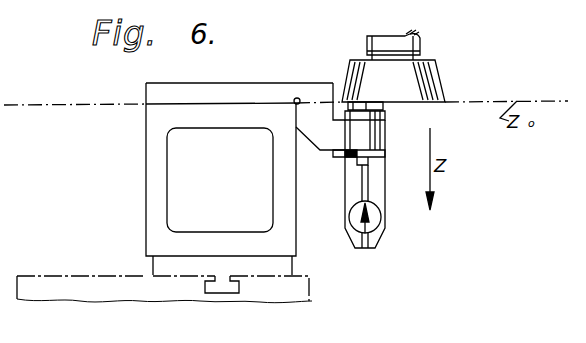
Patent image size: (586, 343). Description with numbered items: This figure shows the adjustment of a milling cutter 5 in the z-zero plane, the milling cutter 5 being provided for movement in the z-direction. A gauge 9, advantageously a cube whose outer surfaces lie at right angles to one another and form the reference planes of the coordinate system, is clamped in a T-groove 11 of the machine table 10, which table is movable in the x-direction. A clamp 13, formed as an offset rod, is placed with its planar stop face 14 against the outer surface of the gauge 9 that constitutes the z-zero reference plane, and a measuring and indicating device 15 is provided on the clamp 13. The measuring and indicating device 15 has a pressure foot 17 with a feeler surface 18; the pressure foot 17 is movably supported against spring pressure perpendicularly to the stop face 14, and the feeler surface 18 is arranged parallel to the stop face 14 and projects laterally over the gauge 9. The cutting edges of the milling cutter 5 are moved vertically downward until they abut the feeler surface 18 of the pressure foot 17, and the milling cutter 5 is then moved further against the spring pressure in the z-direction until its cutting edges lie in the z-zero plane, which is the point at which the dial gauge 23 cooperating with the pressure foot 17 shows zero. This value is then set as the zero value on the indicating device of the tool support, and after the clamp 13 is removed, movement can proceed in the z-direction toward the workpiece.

The milling cutter 5 is at (415, 84).
The gauge 9 is at (194, 193).
The machine table 10 is at (288, 290).
The T-groove 11 is at (222, 286).
The clamp 13 is at (272, 77).
The stop face 14 is at (216, 102).
The measuring and indicating device 15 is at (337, 200).
The pressure foot 17 is at (380, 107).
The feeler surface 18 is at (362, 102).
The dial gauge 23 is at (381, 211).